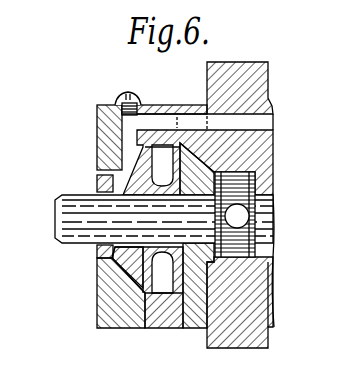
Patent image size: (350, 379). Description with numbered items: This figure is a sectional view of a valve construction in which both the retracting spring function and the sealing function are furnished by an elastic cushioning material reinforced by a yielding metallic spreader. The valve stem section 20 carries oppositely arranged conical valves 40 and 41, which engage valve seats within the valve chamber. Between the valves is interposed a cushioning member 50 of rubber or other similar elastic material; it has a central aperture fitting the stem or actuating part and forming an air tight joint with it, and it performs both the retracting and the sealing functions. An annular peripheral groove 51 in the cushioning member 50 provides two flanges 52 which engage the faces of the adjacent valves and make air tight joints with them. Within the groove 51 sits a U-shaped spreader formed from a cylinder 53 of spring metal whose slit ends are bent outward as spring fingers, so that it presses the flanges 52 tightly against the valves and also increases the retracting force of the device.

The valve stem section 20 is at (58, 197).
The conical valve 40 is at (125, 162).
The conical valve 41 is at (173, 112).
The cushioning member 50 is at (168, 253).
The annular peripheral groove 51 is at (125, 257).
The flanges 52 is at (143, 276).
The cylinder 53 is at (152, 298).